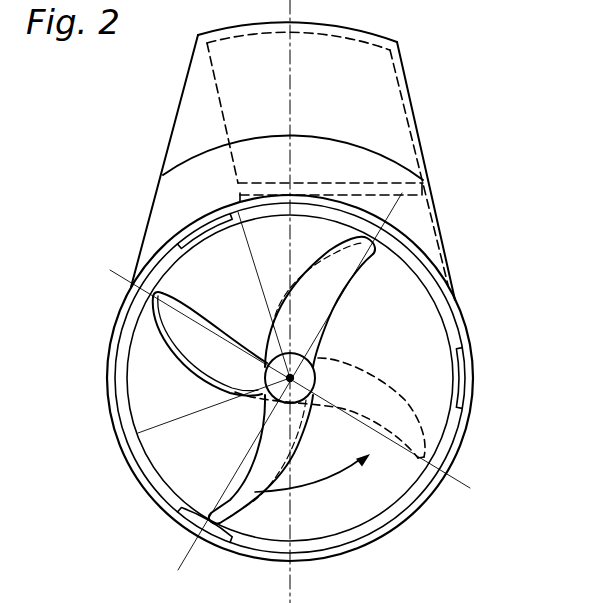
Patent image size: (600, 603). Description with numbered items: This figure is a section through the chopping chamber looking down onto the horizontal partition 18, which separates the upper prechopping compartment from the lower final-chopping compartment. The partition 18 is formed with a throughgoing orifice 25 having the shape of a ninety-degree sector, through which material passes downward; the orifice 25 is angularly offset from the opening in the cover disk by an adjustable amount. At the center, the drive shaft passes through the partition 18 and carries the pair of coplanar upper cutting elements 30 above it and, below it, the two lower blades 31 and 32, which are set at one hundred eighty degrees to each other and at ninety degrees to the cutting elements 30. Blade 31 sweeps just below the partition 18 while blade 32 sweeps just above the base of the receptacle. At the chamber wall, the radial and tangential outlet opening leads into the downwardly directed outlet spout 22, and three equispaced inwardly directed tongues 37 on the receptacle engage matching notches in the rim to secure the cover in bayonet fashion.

The horizontal partition 18 is at (427, 335).
The outlet spout 22 is at (420, 139).
The throughgoing orifice 25 is at (290, 378).
The coplanar cutting elements 30 is at (313, 300).
The lower blade 31 is at (185, 347).
The lower blade 32 is at (415, 415).
The inwardly directed tongues 37 is at (191, 234).